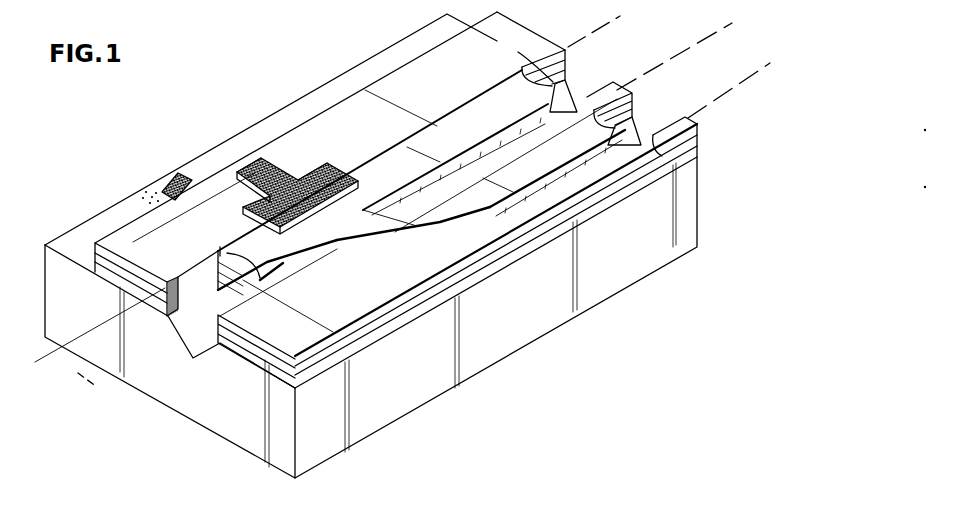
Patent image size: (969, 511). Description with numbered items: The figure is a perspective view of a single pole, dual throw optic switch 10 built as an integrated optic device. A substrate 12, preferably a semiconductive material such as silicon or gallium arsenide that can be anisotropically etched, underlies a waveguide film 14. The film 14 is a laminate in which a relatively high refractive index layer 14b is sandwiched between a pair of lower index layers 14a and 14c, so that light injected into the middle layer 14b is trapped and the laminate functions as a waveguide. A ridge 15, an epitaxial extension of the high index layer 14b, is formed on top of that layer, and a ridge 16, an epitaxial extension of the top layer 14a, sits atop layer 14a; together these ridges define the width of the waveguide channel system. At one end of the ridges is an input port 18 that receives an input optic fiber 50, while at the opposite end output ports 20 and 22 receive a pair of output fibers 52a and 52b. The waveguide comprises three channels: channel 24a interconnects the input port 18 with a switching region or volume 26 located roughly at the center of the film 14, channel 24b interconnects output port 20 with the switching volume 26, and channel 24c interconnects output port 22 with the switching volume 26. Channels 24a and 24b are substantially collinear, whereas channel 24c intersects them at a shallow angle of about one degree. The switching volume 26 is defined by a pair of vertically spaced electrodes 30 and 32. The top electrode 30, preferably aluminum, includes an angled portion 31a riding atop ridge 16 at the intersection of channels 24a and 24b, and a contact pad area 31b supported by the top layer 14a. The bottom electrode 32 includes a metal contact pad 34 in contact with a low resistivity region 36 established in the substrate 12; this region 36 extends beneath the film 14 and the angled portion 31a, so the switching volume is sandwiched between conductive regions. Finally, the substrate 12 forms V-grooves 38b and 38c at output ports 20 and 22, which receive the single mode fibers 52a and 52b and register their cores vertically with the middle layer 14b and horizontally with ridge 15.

The optic switch 10 is at (563, 394).
The substrate 12 is at (590, 300).
The waveguide film 14 is at (414, 377).
The lower index layer 14a is at (102, 252).
The high refractive index layer 14b is at (97, 243).
The lower index layer 14c is at (108, 276).
The ridge 15 is at (248, 289).
The ridge 16 is at (432, 212).
The input port 18 is at (166, 281).
The output port 20 is at (518, 52).
The output port 22 is at (705, 132).
The waveguide channel 24a is at (212, 247).
The waveguide channel 24b is at (362, 162).
The waveguide channel 24c is at (560, 188).
The switching region or volume 26 is at (336, 259).
The top electrode 30 is at (292, 162).
The angled portion 31a is at (300, 185).
The contact pad area 31b is at (256, 163).
The bottom electrode 32 is at (190, 166).
The metal contact pad 34 is at (182, 186).
The low resistivity region 36 is at (148, 190).
The V-groove 38b is at (561, 38).
The V-groove 38c is at (662, 122).
The input optic fiber 50 is at (97, 393).
The output fiber 52a is at (596, 55).
The output fiber 52b is at (700, 87).